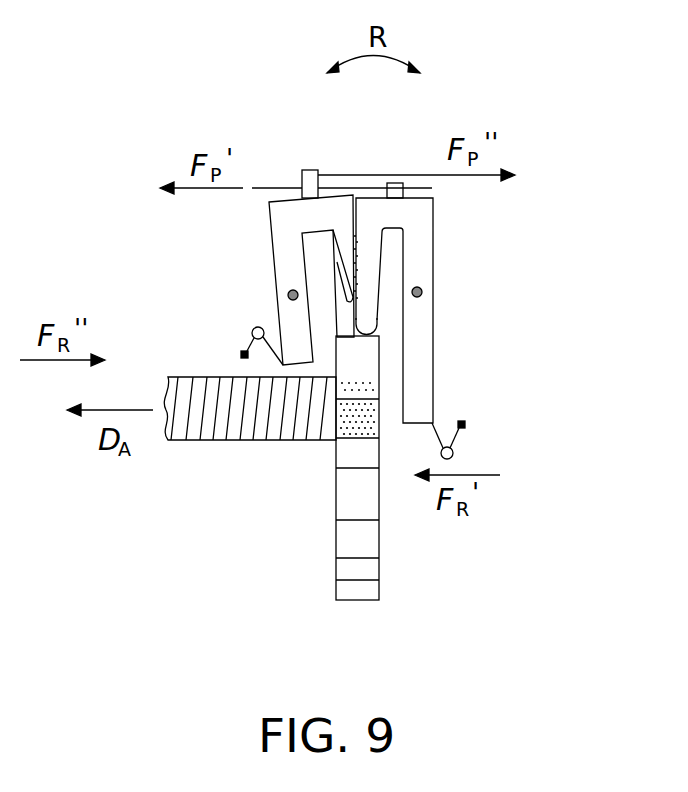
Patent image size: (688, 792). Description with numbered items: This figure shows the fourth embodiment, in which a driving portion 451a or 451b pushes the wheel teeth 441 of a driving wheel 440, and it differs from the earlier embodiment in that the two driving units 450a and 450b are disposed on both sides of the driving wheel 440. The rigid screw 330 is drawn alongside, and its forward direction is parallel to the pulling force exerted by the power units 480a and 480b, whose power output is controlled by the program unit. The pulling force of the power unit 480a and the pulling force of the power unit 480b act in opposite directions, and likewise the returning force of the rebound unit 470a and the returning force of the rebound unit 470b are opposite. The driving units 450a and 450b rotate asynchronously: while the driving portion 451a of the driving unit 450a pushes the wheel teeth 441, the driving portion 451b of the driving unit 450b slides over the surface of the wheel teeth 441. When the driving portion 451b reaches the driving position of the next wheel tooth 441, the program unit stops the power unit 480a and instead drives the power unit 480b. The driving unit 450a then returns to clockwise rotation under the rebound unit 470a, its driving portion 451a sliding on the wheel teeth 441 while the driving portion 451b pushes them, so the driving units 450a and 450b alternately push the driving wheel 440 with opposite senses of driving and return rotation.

The rigid screw 330 is at (250, 442).
The driving wheel 440 is at (363, 602).
The wheel teeth 441 is at (367, 570).
The driving unit 450a is at (420, 227).
The driving unit 450b is at (277, 225).
The driving portion 451a is at (362, 326).
The driving portion 451b is at (342, 262).
The rebound unit 470a is at (453, 450).
The rebound unit 470b is at (252, 333).
The power unit 480a is at (275, 187).
The power unit 480b is at (363, 172).